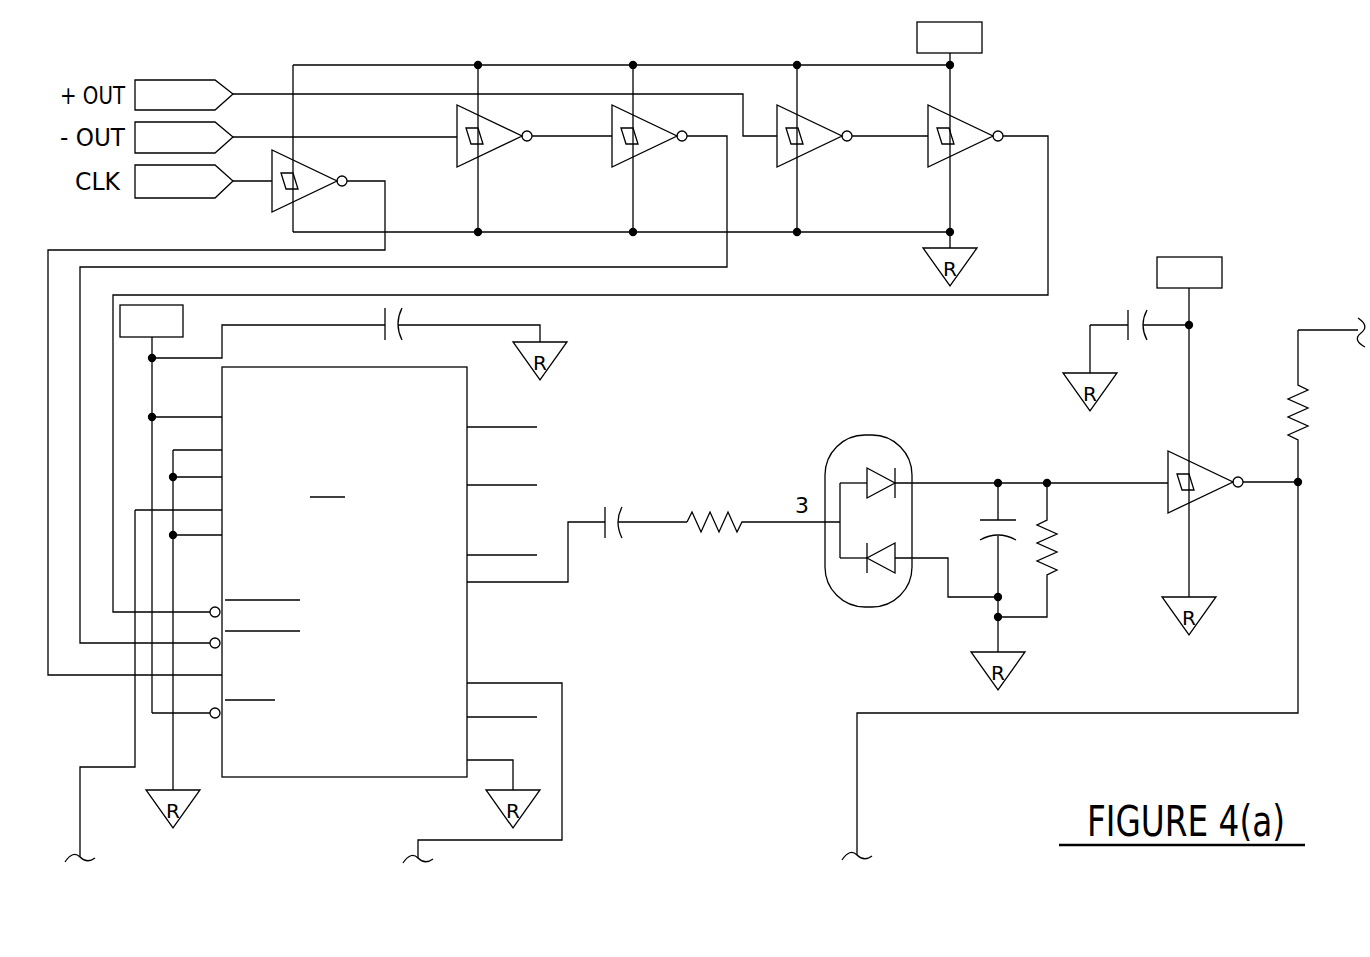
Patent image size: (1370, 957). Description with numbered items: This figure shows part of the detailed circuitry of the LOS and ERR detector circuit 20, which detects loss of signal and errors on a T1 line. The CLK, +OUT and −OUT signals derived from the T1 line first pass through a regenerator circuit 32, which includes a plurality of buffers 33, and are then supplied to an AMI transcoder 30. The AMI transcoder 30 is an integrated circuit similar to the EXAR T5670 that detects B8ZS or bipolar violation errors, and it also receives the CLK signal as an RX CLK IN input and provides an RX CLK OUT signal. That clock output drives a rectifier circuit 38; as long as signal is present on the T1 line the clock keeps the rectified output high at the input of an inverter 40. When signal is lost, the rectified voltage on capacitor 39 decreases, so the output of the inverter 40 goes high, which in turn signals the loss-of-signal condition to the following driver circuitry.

The LOS and ERR detector circuit 20 is at (598, 348).
The AMI transcoder 30 is at (438, 367).
The regenerator circuit 32 is at (512, 61).
The buffers 33 is at (272, 206).
The rectifier circuit 38 is at (843, 603).
The capacitor 39 is at (988, 516).
The inverter 40 is at (1168, 500).